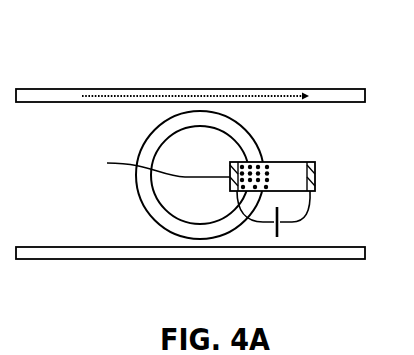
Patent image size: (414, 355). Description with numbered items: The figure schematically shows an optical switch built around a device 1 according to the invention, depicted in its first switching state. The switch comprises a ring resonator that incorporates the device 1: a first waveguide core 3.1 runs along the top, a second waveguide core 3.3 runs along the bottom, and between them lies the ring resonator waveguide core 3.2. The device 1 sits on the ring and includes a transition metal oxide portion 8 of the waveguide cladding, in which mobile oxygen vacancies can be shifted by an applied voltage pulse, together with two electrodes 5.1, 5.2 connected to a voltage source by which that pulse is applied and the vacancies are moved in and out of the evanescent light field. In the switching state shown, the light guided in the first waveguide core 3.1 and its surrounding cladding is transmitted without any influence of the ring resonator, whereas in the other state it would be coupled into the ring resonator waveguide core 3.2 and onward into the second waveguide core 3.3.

The device 1 is at (235, 142).
The first waveguide core 3.1 is at (43, 89).
The ring resonator waveguide core 3.2 is at (184, 111).
The second waveguide core 3.3 is at (302, 258).
The electrode 5.1 is at (151, 167).
The electrode 5.2 is at (318, 177).
The transition metal oxide portion 8 is at (280, 165).